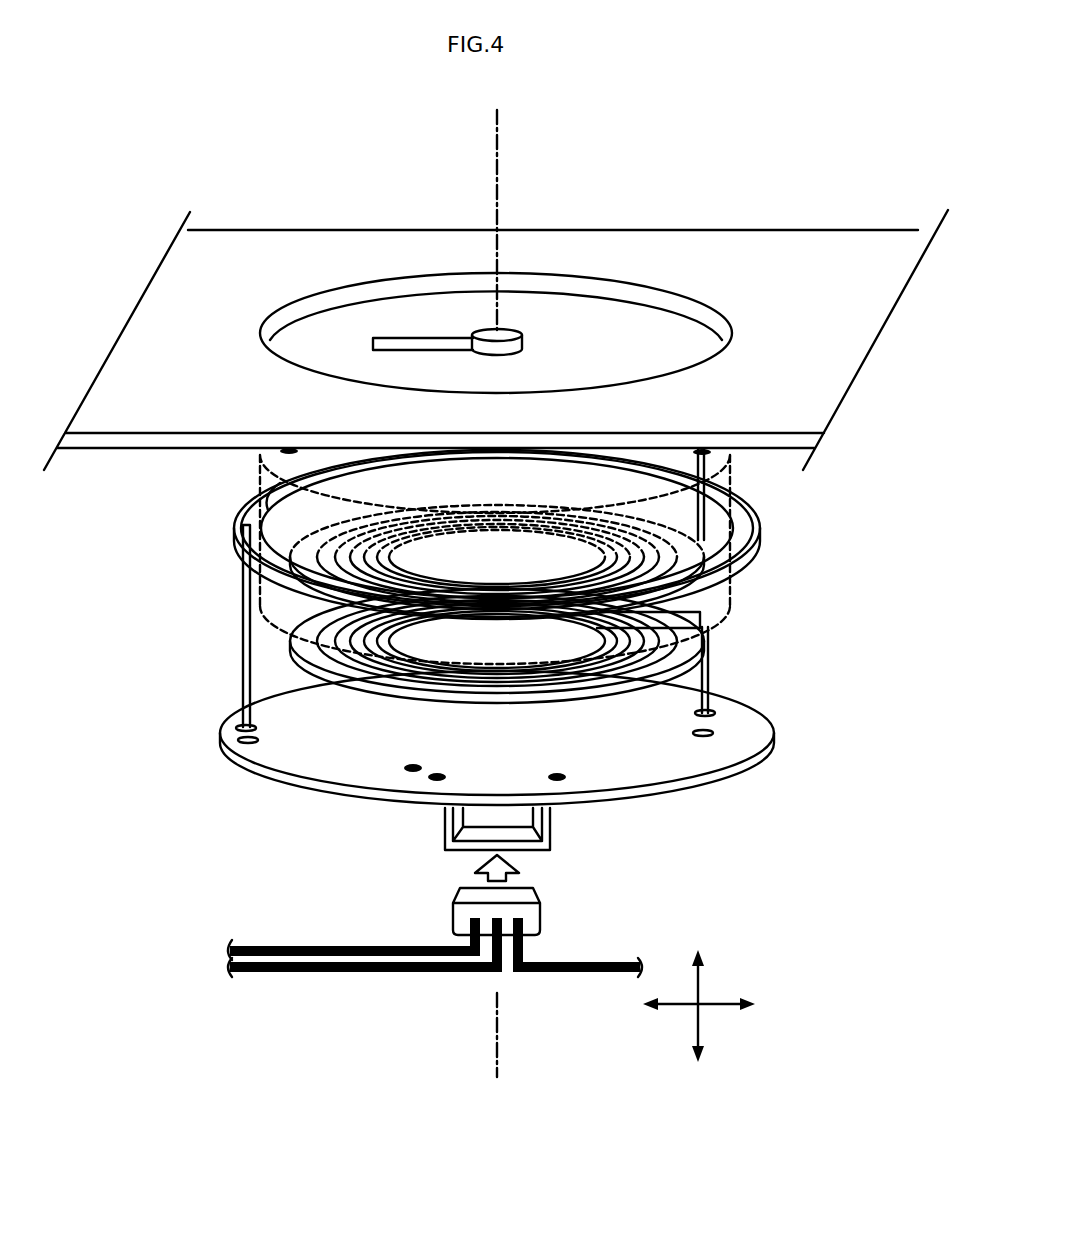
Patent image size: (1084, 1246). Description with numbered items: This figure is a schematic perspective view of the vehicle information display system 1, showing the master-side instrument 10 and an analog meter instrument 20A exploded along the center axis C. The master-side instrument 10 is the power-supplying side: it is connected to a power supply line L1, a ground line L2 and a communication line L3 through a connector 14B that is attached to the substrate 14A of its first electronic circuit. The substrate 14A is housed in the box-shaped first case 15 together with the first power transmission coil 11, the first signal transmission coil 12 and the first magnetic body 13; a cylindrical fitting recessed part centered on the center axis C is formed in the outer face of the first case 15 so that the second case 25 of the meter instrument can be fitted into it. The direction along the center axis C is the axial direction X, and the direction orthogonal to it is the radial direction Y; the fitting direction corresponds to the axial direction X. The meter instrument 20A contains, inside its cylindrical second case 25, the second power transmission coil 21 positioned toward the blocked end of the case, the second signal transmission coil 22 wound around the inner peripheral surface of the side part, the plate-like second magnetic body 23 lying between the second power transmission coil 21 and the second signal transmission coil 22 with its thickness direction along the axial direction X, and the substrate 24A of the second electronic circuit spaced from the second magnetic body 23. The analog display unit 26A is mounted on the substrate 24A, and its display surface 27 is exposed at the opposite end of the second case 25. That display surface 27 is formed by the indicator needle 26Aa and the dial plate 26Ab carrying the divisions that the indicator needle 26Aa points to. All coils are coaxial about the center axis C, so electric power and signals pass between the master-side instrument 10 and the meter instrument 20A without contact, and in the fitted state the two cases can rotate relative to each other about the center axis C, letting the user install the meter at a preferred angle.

The vehicle information display system 1 is at (82, 515).
The master-side instrument 10 is at (502, 692).
The first power transmission coil 11 is at (673, 608).
The first signal transmission coil 12 is at (740, 510).
The first magnetic body 13 is at (640, 677).
The substrate 14A is at (688, 757).
The connector 14B is at (458, 892).
The first case 15 is at (820, 393).
The meter instrument 20A is at (503, 356).
The second power transmission coil 21 is at (446, 559).
The second signal transmission coil 22 is at (250, 497).
The second magnetic body 23 is at (323, 585).
The substrate 24A is at (680, 468).
The second case 25 is at (730, 575).
The display unit 26A is at (611, 268).
The indicator needle 26Aa is at (432, 338).
The dial plate 26Ab is at (662, 345).
The display surface 27 is at (608, 318).
The power supply line L1 is at (330, 945).
The ground line L2 is at (330, 975).
The communication line L3 is at (603, 962).
The center axis C is at (540, 593).
The axial direction X is at (700, 970).
The radial direction Y is at (722, 1008).